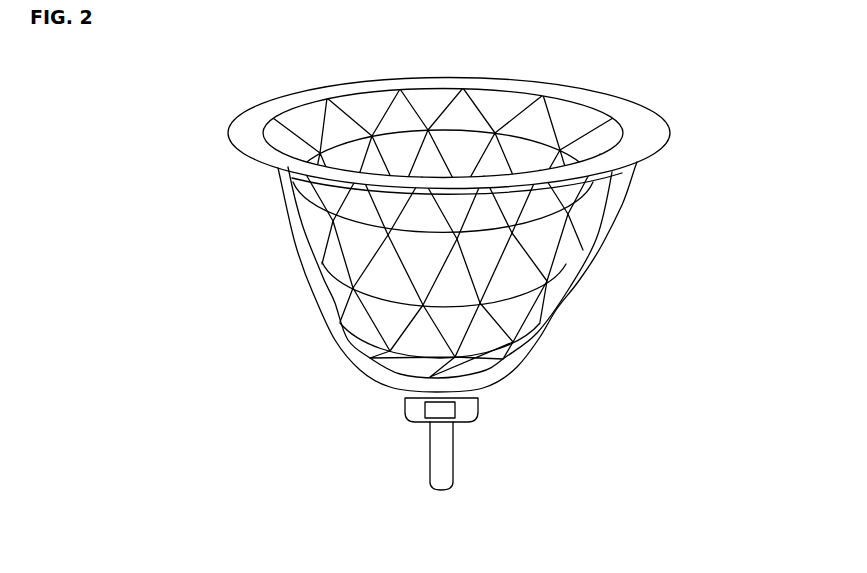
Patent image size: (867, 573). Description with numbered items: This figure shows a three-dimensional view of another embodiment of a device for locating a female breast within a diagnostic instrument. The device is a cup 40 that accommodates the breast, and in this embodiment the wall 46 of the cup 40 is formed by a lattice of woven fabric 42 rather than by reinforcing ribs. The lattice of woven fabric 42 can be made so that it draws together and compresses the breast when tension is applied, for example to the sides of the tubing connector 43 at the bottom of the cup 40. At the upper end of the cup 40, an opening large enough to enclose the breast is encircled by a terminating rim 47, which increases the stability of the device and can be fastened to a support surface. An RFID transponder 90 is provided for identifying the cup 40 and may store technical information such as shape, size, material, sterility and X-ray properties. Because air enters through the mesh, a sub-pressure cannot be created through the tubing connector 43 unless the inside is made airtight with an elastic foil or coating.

The cup 40 is at (475, 284).
The lattice of woven fabric 42 is at (344, 306).
The tubing connector 43 is at (437, 452).
The wall 46 is at (564, 256).
The terminating rim 47 is at (256, 123).
The RFID transponder 90 is at (478, 408).